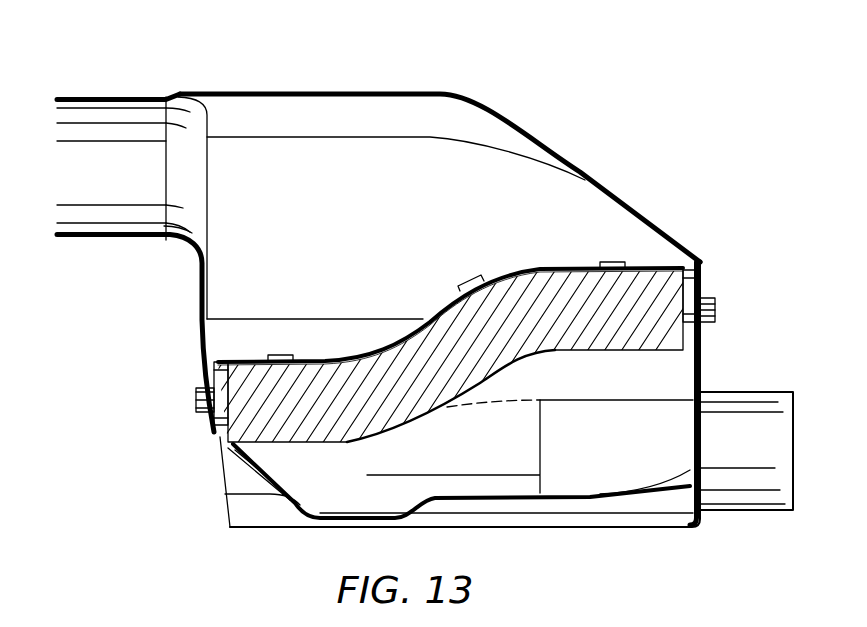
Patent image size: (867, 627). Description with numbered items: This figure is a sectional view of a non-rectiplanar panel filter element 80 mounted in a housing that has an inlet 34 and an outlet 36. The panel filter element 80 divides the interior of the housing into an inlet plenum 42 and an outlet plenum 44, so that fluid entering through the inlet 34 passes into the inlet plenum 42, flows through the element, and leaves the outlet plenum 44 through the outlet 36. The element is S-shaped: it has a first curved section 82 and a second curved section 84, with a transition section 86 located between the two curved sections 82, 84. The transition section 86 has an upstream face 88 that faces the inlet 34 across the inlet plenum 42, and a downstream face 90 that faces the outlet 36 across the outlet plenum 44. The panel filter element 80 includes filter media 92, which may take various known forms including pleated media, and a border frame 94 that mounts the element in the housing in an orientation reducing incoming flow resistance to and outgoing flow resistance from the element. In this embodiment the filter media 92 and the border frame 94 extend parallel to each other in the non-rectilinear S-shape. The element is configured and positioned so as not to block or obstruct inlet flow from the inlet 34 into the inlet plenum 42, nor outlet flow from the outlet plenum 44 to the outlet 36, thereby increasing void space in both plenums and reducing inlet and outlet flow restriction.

The inlet 34 is at (793, 423).
The outlet 36 is at (57, 131).
The inlet plenum 42 is at (577, 474).
The outlet plenum 44 is at (323, 148).
The panel filter element 80 is at (631, 248).
The curved section 82 is at (348, 430).
The curved section 84 is at (575, 287).
The transition section 86 is at (517, 307).
The upstream face 88 is at (483, 391).
The downstream face 90 is at (397, 335).
The filter media 92 is at (247, 420).
The border frame 94 is at (700, 292).